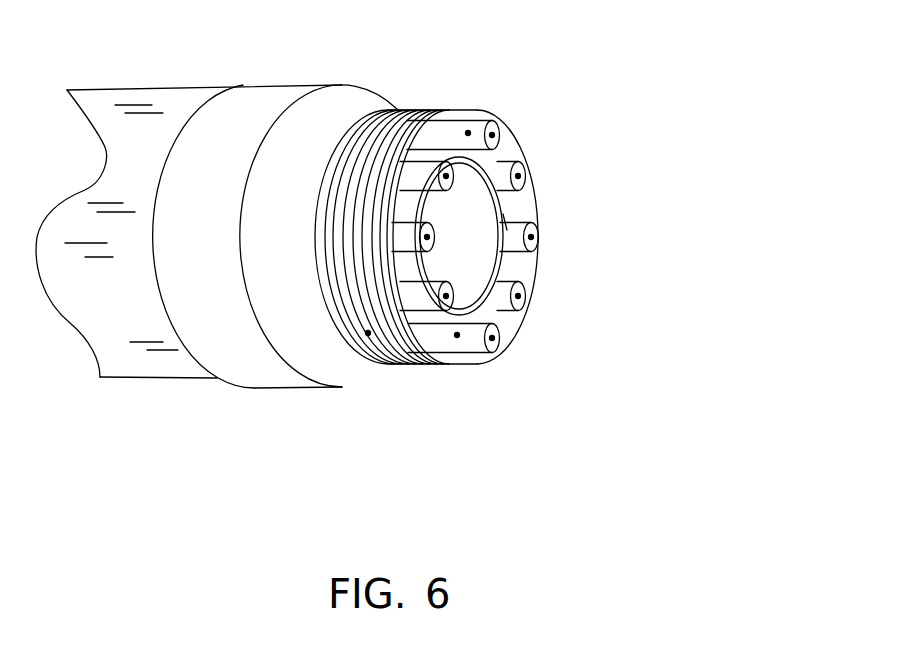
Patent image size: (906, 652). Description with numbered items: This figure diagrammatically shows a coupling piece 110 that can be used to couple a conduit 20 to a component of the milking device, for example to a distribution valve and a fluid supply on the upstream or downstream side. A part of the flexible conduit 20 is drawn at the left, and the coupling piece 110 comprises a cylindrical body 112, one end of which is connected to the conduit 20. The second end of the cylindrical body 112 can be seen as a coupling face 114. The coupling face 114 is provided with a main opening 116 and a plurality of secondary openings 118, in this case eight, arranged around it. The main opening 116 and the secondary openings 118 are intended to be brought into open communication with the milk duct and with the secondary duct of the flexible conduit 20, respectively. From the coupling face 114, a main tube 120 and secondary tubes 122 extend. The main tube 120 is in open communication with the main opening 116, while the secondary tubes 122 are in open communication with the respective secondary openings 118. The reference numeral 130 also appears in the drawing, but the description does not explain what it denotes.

The cable 20 is at (183, 390).
The connector 110 is at (536, 168).
The threaded portion 112 is at (387, 122).
The insulator ring 114 is at (498, 202).
The center insulator 116 is at (473, 247).
The contact pins 118 is at (446, 176).
The insulator face 120 is at (505, 222).
The apertures 122 is at (468, 133).
The thread end 130 is at (368, 333).